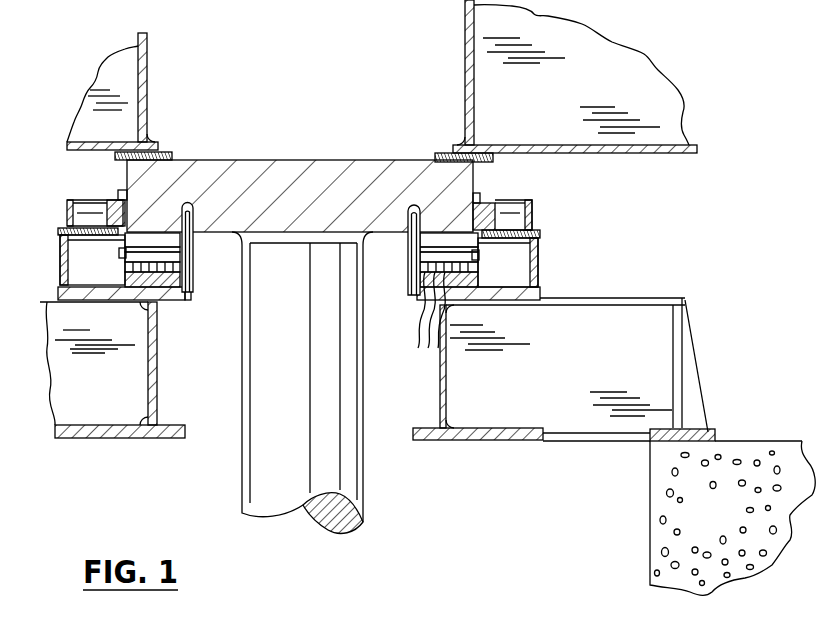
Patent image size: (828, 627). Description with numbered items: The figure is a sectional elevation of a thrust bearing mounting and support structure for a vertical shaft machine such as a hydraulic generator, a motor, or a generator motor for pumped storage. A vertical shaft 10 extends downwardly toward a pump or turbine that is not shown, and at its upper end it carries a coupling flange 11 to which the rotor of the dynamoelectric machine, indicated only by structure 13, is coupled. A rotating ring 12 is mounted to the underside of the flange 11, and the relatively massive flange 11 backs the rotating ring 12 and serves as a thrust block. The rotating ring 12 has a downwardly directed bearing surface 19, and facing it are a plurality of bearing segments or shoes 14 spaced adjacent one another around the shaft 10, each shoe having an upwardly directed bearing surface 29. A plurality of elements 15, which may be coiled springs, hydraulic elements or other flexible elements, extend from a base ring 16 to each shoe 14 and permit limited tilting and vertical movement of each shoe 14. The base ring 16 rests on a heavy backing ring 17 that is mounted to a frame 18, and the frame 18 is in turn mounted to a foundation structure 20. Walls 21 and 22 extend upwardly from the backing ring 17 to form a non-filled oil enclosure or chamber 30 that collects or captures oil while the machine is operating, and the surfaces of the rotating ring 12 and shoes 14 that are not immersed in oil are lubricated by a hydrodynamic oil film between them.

The vertical shaft 10 is at (258, 473).
The coupling flange 11 is at (268, 172).
The rotating ring 12 is at (197, 240).
The structure 13 is at (583, 95).
The bearing segments or shoes 14 is at (196, 266).
The elements 15 is at (440, 298).
The base ring 16 is at (189, 292).
The backing ring 17 is at (155, 301).
The frame 18 is at (567, 378).
The bearing surface 19 is at (470, 252).
The foundation structure 20 is at (728, 523).
The wall 21 is at (412, 302).
The wall 22 is at (540, 258).
The bearing surface 29 is at (413, 268).
The oil enclosure or chamber 30 is at (112, 275).